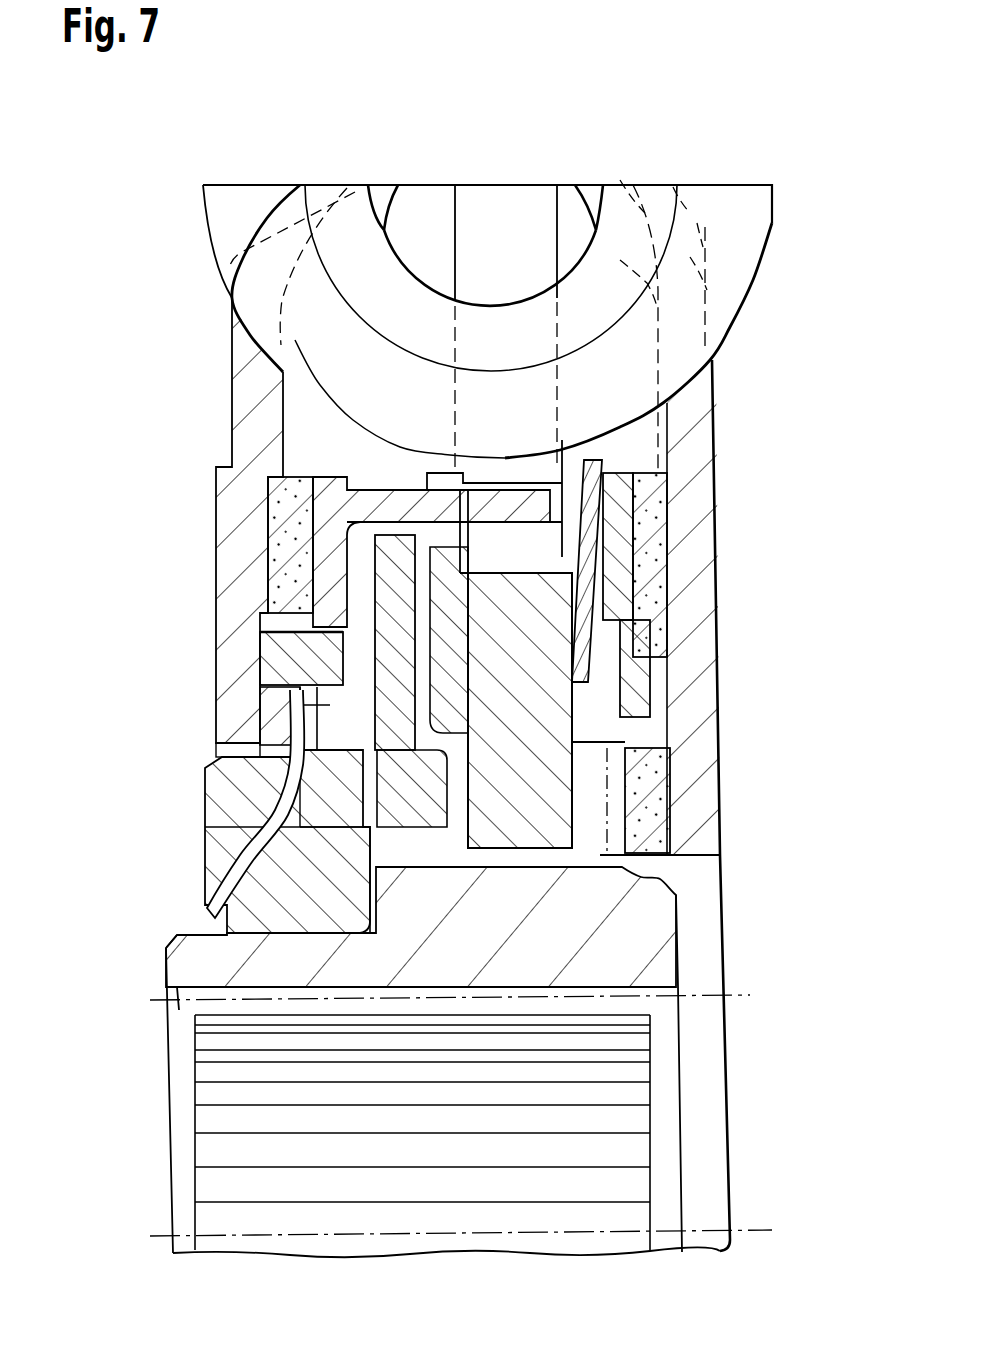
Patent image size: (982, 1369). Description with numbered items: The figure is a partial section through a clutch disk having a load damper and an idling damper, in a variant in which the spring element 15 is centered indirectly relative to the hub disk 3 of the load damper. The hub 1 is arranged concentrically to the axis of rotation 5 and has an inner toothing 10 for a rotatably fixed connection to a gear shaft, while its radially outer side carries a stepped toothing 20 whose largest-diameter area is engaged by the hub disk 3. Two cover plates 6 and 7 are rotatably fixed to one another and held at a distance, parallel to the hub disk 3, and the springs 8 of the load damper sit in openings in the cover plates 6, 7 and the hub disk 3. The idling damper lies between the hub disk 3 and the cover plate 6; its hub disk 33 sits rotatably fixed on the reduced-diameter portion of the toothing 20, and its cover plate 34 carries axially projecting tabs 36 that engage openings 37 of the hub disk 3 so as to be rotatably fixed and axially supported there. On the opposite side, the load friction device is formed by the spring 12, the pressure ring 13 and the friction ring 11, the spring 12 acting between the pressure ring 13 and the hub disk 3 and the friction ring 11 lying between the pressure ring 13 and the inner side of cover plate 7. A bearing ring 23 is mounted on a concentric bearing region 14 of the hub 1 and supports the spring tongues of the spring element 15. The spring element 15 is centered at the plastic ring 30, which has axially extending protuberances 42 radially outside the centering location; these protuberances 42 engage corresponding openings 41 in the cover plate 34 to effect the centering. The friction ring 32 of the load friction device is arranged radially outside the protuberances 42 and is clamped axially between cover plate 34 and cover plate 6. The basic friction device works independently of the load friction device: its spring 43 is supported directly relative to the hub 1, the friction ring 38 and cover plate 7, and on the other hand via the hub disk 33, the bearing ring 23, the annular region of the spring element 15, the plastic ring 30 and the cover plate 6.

The hub 1 is at (653, 938).
The hub disk 3 is at (557, 823).
The axis of rotation 5 is at (760, 1228).
The cover plate 6 is at (232, 337).
The cover plate 7 is at (710, 413).
The springs 8 is at (743, 260).
The inner toothing 10 is at (626, 1010).
The friction ring 11 is at (655, 527).
The spring 12 is at (590, 622).
The pressure ring 13 is at (653, 687).
The bearing region 14 is at (243, 935).
The spring element 15 is at (213, 912).
The toothing 20 is at (597, 798).
The bearing ring 23 is at (262, 733).
The plastic ring 30 is at (228, 770).
The friction ring 32 is at (290, 512).
The hub disk 33 is at (363, 827).
The cover plate 34 is at (330, 580).
The tabs 36 is at (367, 497).
The openings 37 is at (532, 562).
The friction ring 38 is at (653, 760).
The openings 41 is at (330, 705).
The protuberances 42 is at (323, 657).
The spring 43 is at (437, 800).